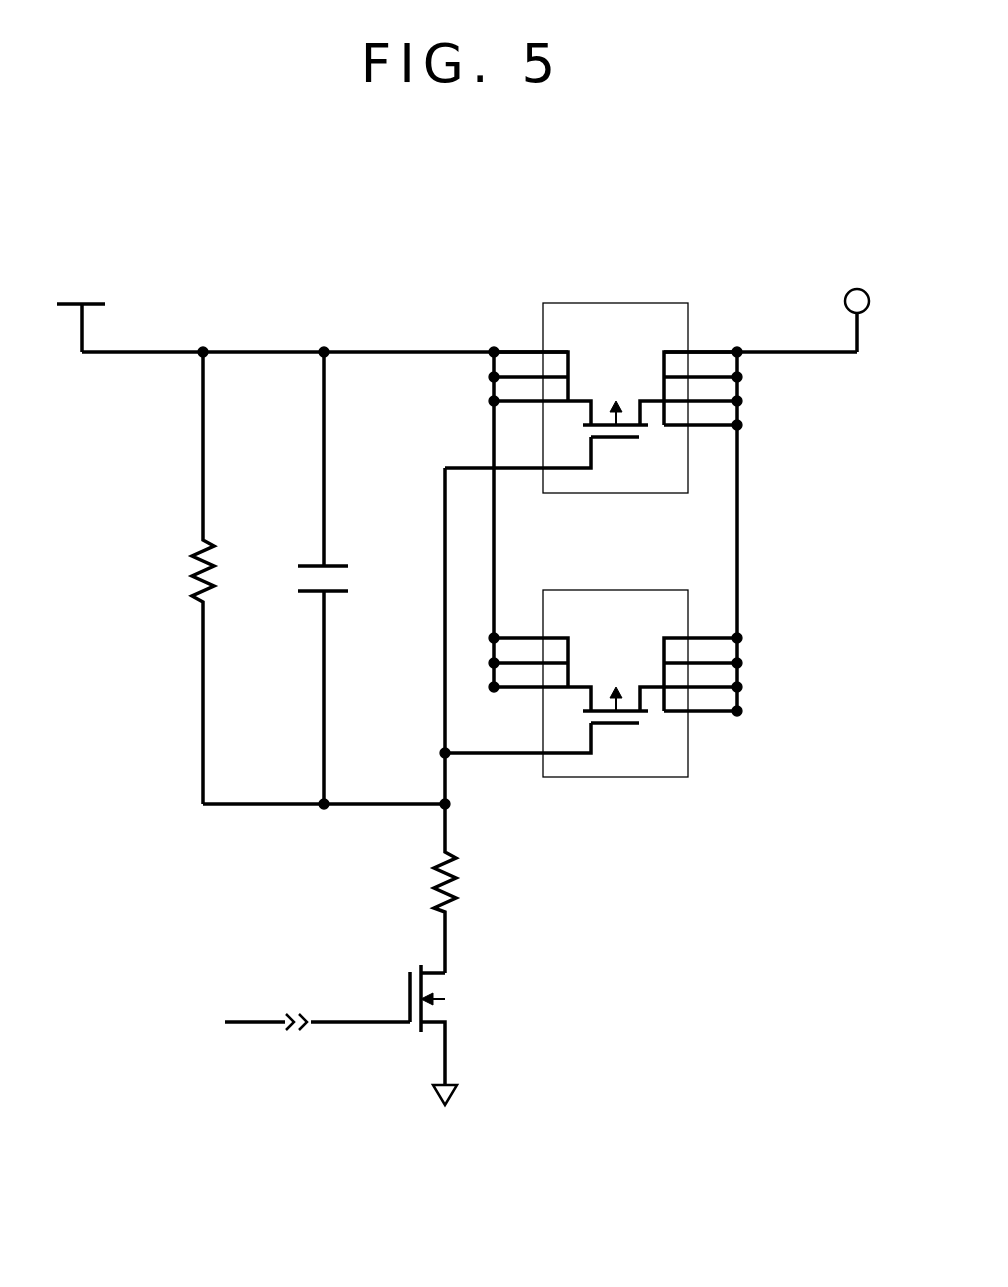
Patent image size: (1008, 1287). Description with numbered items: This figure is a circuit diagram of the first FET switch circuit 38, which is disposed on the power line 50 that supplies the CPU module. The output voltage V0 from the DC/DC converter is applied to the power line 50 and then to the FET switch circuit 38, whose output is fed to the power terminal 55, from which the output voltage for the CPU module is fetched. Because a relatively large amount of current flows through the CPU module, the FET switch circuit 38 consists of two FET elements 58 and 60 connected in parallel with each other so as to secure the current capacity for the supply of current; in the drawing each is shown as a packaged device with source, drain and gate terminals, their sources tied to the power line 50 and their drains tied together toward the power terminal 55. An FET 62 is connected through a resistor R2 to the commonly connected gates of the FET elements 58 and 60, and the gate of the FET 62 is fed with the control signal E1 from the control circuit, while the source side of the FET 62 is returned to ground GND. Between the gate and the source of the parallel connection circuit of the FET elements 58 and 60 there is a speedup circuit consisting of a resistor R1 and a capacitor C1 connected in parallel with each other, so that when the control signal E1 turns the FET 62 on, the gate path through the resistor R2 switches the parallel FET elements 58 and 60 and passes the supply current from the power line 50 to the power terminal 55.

The first FET switch circuit 38 is at (483, 312).
The power line 50 is at (267, 352).
The power terminal 55 is at (858, 289).
The FET element 58 is at (617, 303).
The FET element 60 is at (617, 590).
The FET 62 is at (448, 997).
The resistor R1 is at (193, 570).
The resistor R2 is at (457, 882).
The capacitor C1 is at (344, 582).
The output voltage V0 is at (81, 310).
The control signal E1 is at (289, 1022).
The ground GND is at (445, 1112).